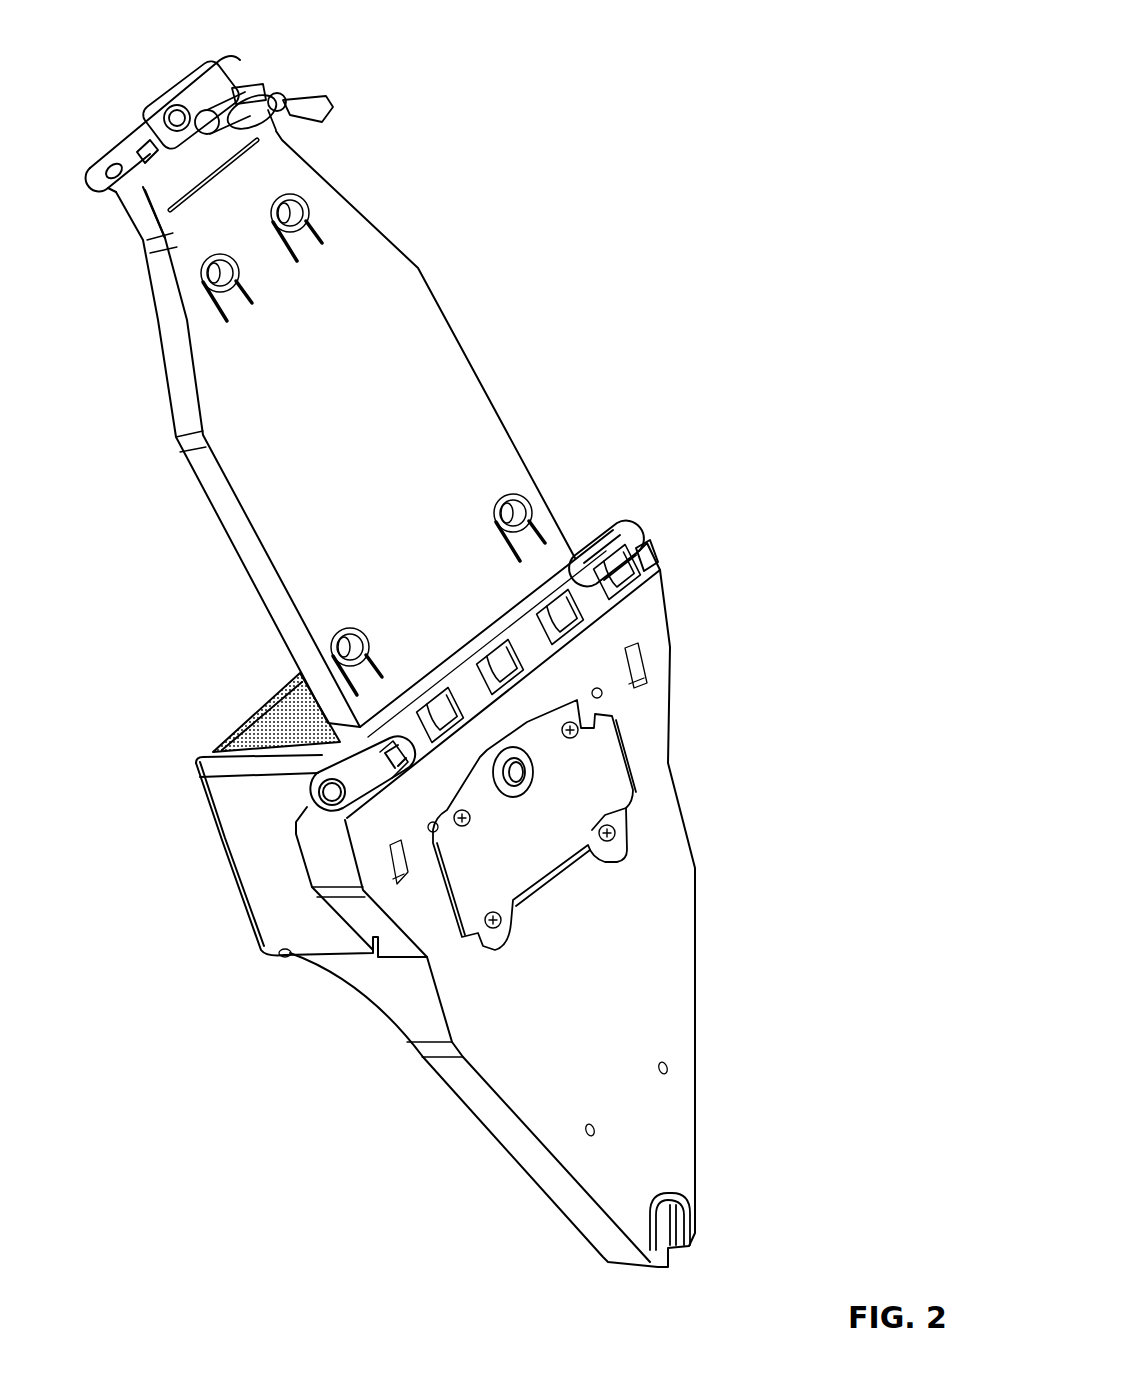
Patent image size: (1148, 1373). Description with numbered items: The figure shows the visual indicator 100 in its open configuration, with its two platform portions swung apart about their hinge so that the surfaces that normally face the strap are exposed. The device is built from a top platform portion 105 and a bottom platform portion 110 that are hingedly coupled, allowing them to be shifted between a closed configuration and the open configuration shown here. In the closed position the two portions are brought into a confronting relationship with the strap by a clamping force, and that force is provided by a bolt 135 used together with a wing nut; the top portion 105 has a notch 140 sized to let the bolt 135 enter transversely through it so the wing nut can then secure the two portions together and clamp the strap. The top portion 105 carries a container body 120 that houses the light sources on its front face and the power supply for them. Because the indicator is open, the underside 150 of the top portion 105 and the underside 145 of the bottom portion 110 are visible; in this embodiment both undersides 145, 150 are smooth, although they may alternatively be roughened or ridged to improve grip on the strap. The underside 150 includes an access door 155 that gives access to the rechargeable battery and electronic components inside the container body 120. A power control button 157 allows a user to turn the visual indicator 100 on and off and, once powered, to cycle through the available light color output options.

The visual indicator 100 is at (714, 40).
The top platform portion 105 is at (697, 933).
The bottom platform portion 110 is at (148, 272).
The container body 120 is at (200, 800).
The bolt 135 is at (283, 80).
The notch 140 is at (676, 1258).
The underside of the bottom portion 145 is at (438, 303).
The underside of the top portion 150 is at (507, 1018).
The access door 155 is at (595, 747).
The power control button 157 is at (517, 777).